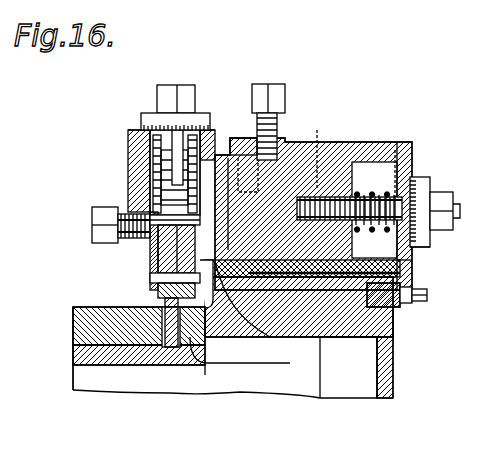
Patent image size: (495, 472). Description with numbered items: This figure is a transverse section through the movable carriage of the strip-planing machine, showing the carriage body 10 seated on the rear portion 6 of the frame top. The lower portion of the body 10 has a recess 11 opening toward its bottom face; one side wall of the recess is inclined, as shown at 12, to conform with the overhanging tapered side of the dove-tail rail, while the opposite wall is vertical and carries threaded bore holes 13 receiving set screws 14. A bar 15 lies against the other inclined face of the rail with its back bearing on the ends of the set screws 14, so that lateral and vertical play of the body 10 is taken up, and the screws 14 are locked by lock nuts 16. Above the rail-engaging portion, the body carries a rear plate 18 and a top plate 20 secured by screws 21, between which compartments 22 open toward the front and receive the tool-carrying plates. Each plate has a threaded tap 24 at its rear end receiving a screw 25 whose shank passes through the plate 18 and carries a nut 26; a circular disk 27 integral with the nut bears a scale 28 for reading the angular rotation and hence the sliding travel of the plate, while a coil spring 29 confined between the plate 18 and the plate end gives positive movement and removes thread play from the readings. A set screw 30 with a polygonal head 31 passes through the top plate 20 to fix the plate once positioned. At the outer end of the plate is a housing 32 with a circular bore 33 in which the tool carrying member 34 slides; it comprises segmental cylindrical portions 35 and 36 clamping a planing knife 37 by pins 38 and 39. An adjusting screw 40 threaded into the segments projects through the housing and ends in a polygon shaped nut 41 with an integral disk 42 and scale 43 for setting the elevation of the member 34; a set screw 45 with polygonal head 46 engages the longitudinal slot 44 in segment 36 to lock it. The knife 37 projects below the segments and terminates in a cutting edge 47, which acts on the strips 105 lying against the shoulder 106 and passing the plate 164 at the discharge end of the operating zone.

The rear portion of the top 6 is at (325, 345).
The body 10 is at (400, 265).
The recess 11 is at (310, 282).
The inclined side wall 12 is at (262, 320).
The bore holes 13 is at (393, 318).
The set screws 14 is at (427, 296).
The bar 15 is at (186, 53).
The lock nuts 16 is at (400, 290).
The plate 18 is at (413, 140).
The top plate 20 is at (380, 140).
The screws 21 is at (375, 140).
The compartments 22 is at (395, 140).
The threaded taps 24 is at (313, 142).
The screws 25 is at (418, 178).
The nuts 26 is at (440, 190).
The circular disks 27 is at (430, 238).
The scales 28 is at (455, 206).
The coil springs 29 is at (374, 210).
The set screws 30 is at (240, 138).
The polygonal heads 31 is at (278, 100).
The housing 32 is at (130, 145).
The circular bore 33 is at (128, 134).
The tool carrying member 34 is at (144, 266).
The segmental cylindrical portion 35 is at (195, 345).
The segmental cylindrical portion 36 is at (150, 275).
The planing knife 37 is at (228, 320).
The pin 38 is at (140, 185).
The pin 39 is at (158, 291).
The adjusting screw 40 is at (130, 162).
The polygon shaped nut 41 is at (188, 92).
The disk 42 is at (155, 113).
The scale 43 is at (185, 118).
The slot 44 is at (150, 257).
The set screw 45 is at (150, 205).
The polygonal shaped head 46 is at (92, 222).
The cutting edges 47 is at (139, 367).
The strips 105 is at (490, 333).
The shoulder 106 is at (196, 385).
The plate 164 is at (73, 330).